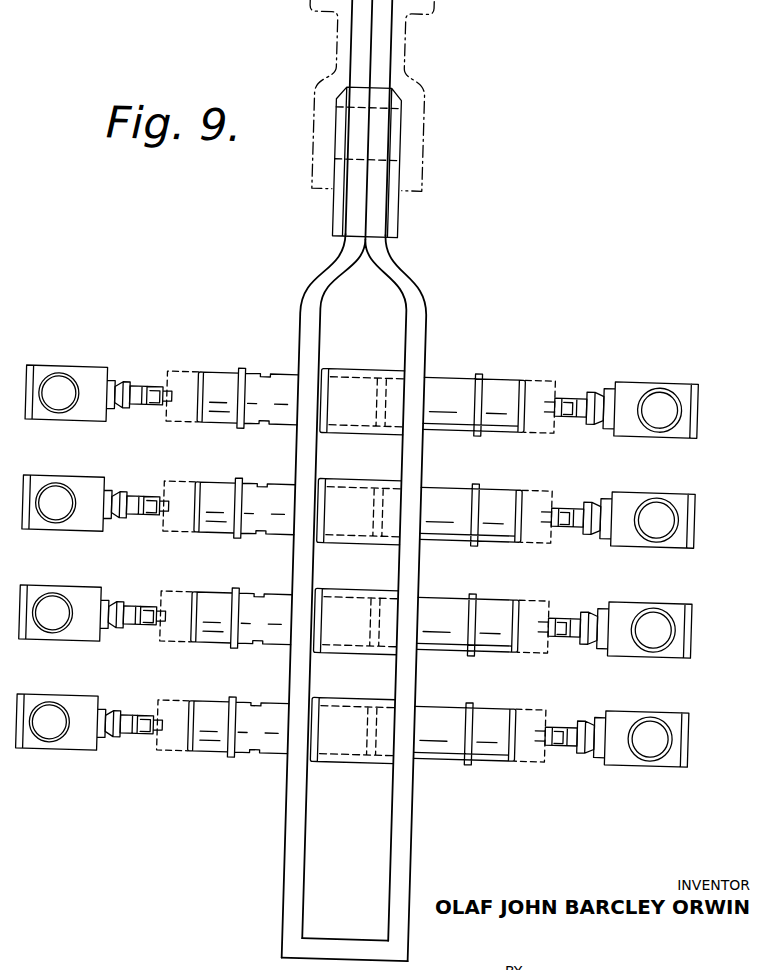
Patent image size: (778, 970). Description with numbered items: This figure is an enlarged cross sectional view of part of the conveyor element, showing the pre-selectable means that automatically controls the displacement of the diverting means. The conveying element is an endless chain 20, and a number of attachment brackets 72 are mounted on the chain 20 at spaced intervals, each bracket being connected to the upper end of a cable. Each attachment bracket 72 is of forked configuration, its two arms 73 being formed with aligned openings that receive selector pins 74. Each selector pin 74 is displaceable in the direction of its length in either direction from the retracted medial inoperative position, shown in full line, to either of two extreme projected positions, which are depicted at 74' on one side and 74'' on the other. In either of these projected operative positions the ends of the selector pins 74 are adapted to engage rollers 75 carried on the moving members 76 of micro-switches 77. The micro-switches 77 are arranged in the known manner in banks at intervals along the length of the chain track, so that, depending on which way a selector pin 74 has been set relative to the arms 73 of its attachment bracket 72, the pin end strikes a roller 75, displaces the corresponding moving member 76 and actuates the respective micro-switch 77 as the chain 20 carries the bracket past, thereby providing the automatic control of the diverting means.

The endless chain 20 is at (384, 127).
The attachment bracket 72 is at (361, 481).
The arms 73 is at (292, 340).
The selector pins 74 is at (418, 555).
The projected position of selector pin 74' is at (554, 556).
The projected position of selector pin 74'' is at (215, 539).
The rollers 75 is at (576, 422).
The moving members 76 is at (115, 387).
The micro-switches 77 is at (646, 366).